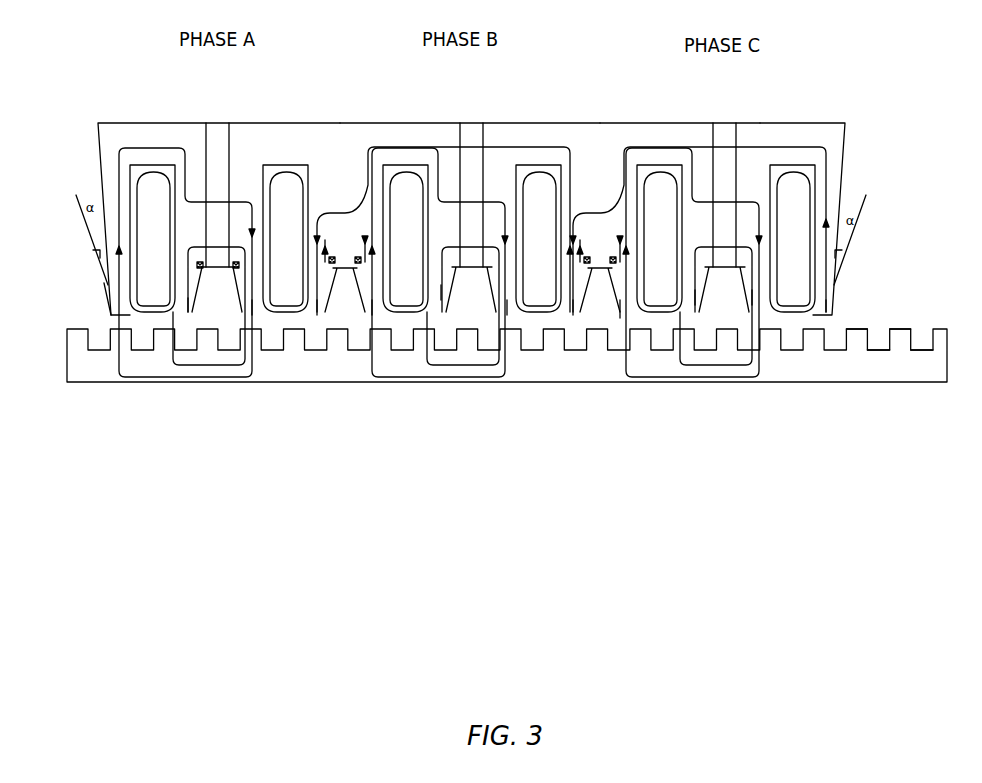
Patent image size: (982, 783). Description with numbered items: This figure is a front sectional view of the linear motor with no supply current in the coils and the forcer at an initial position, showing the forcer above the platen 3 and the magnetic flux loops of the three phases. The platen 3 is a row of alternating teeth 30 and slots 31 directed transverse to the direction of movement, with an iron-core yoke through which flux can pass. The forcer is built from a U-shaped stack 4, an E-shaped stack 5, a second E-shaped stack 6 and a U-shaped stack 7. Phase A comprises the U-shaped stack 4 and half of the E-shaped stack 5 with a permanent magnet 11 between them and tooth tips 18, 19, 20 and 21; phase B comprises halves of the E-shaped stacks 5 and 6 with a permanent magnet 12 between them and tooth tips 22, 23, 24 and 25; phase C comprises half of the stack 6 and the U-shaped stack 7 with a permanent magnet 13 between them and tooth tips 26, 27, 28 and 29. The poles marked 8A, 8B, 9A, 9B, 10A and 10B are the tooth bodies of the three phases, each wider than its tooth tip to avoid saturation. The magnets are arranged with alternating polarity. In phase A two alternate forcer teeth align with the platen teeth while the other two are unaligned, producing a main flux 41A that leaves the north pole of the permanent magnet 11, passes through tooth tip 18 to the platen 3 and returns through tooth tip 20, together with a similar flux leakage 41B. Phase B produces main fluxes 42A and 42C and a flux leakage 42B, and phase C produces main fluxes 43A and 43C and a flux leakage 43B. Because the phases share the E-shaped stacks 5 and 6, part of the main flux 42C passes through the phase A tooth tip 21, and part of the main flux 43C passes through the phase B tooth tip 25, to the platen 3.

The platen 3 is at (87, 366).
The U-shaped stack 4 is at (107, 143).
The E-shaped stack 5 is at (341, 145).
The E-shaped stack 6 is at (603, 145).
The U-shaped stack 7 is at (785, 132).
The magnetic pole of phase A 8A is at (152, 238).
The magnetic pole of phase A 8B is at (285, 238).
The magnetic pole of phase B 9A is at (405, 238).
The magnetic pole of phase B 9B is at (538, 238).
The magnetic pole of phase C 10A is at (659, 238).
The magnetic pole of phase C 10B is at (792, 238).
The permanent magnet 11 is at (213, 135).
The permanent magnet 12 is at (468, 153).
The permanent magnet 13 is at (722, 160).
The tooth tip 18 is at (110, 287).
The tooth tip 19 is at (182, 298).
The tooth tip 20 is at (257, 308).
The tooth tip 21 is at (318, 308).
The tooth tip 22 is at (372, 305).
The tooth tip 23 is at (435, 288).
The tooth tip 24 is at (507, 308).
The tooth tip 25 is at (575, 300).
The tooth tip 26 is at (620, 318).
The tooth tip 27 is at (693, 297).
The tooth tip 28 is at (752, 298).
The tooth tip 29 is at (823, 308).
The teeth 30 is at (920, 337).
The slots 31 is at (940, 337).
The main flux 41A is at (140, 147).
The flux leakage 41B is at (217, 245).
The main flux 42A is at (434, 230).
The flux leakage 42B is at (465, 226).
The main flux 42C is at (547, 147).
The main flux 43A is at (691, 235).
The flux leakage 43B is at (716, 229).
The main flux 43C is at (554, 147).